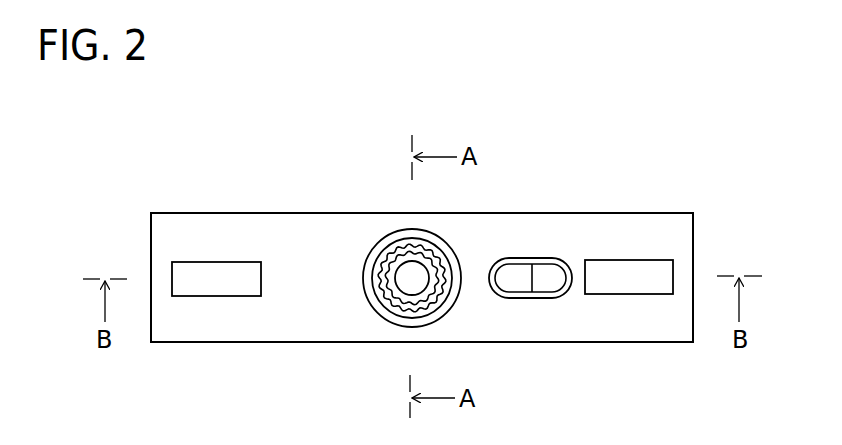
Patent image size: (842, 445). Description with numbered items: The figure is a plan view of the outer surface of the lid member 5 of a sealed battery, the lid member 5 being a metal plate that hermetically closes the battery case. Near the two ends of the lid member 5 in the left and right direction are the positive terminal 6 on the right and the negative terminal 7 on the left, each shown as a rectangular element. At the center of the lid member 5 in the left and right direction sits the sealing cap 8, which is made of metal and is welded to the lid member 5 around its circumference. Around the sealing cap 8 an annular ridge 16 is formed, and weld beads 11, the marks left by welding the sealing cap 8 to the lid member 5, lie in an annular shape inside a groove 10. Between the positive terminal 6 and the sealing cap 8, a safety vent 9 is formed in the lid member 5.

The lid member 5 is at (656, 228).
The positive terminal 6 is at (629, 283).
The negative terminal 7 is at (216, 284).
The sealing cap 8 is at (411, 285).
The safety vent 9 is at (545, 258).
The groove 10 is at (372, 257).
The weld beads 11 is at (448, 267).
The annular ridge 16 is at (380, 292).